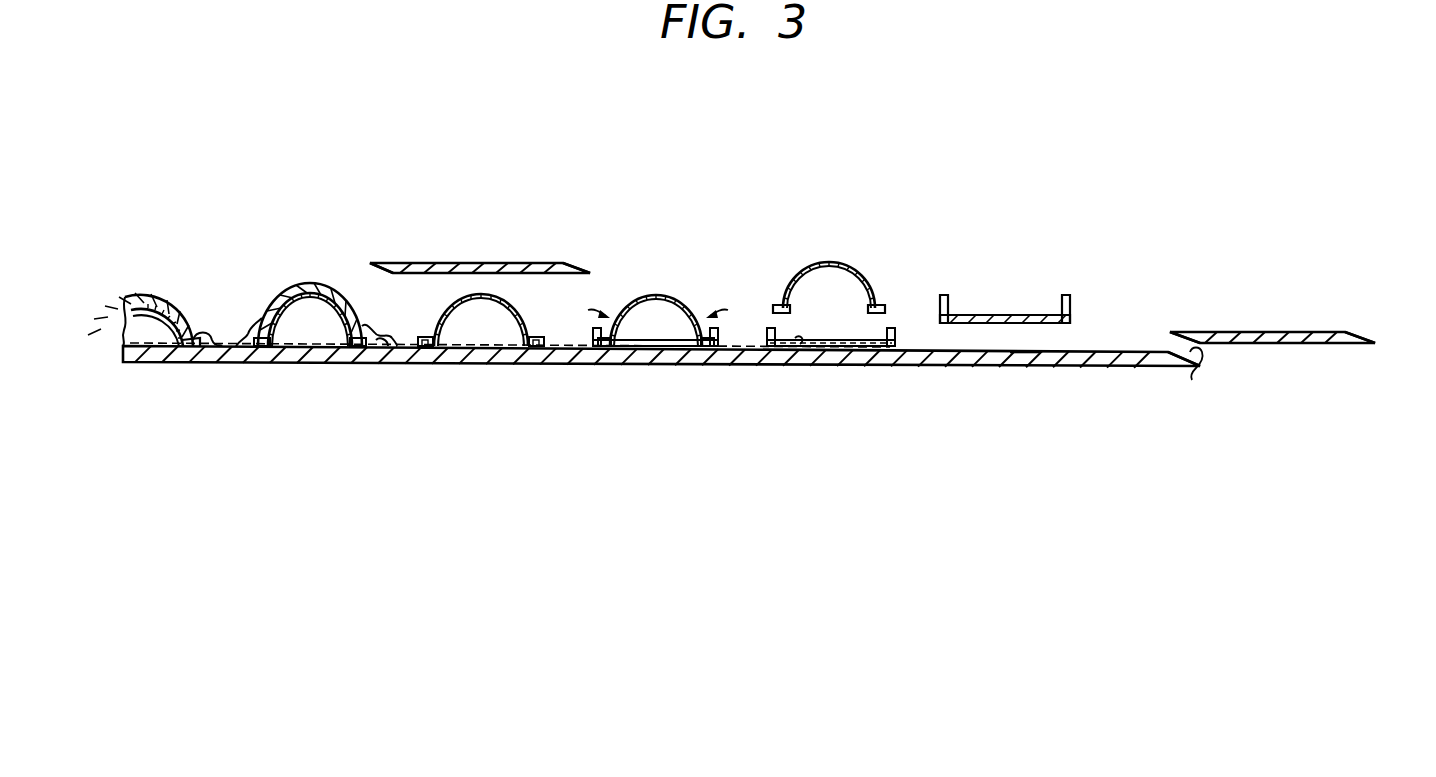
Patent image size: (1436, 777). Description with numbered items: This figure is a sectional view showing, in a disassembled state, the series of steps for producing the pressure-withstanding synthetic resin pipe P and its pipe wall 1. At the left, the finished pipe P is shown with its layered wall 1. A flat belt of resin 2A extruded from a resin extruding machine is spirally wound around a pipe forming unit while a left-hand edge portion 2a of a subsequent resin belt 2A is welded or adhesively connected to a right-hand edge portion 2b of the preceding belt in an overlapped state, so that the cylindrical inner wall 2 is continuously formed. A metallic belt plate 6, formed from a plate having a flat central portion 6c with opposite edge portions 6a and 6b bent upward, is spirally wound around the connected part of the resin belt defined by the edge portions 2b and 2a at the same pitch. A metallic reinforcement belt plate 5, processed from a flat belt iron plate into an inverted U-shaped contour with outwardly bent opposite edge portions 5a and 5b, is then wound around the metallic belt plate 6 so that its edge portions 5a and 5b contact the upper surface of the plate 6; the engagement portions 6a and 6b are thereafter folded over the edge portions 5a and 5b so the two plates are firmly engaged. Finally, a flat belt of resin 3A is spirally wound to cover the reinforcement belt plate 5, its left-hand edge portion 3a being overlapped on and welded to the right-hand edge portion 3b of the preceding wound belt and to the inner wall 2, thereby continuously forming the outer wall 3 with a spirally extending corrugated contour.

The pressure-withstanding synthetic resin pipe P is at (158, 278).
The pipe wall 1 is at (313, 279).
The inner wall 2 is at (286, 354).
The left-hand edge portion of resin belt 2a is at (1198, 336).
The flat belt of resin 2A is at (1276, 330).
The right-hand edge portion of resin belt 2b is at (1354, 337).
The outer wall 3 is at (318, 288).
The left-hand edge portion of resin belt 3a is at (394, 266).
The flat belt of resin 3A is at (482, 260).
The right-hand edge portion of resin belt 3b is at (568, 268).
The metallic reinforcement belt plate 5 is at (662, 296).
The edge portion of metallic reinforcement belt plate 5a is at (434, 347).
The edge portion of metallic reinforcement belt plate 5b is at (530, 347).
The metallic belt plate 6 is at (798, 346).
The edge portion of metallic belt plate 6a is at (592, 340).
The edge portion of metallic belt plate 6b is at (718, 336).
The flat central portion of metallic belt plate 6c is at (1012, 316).